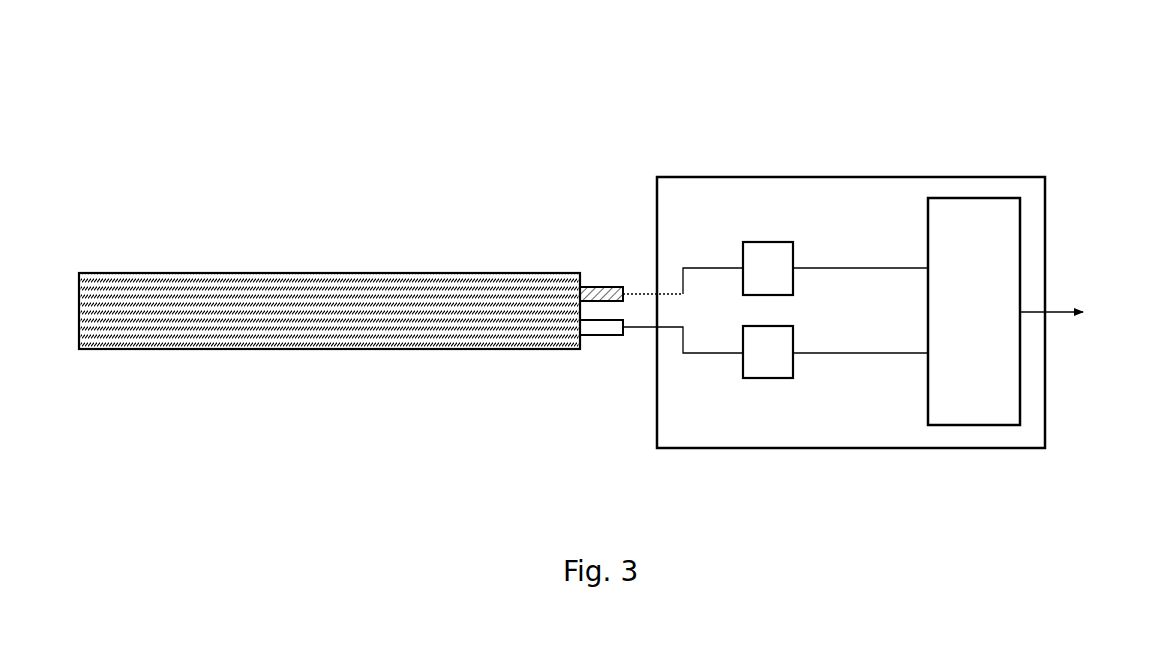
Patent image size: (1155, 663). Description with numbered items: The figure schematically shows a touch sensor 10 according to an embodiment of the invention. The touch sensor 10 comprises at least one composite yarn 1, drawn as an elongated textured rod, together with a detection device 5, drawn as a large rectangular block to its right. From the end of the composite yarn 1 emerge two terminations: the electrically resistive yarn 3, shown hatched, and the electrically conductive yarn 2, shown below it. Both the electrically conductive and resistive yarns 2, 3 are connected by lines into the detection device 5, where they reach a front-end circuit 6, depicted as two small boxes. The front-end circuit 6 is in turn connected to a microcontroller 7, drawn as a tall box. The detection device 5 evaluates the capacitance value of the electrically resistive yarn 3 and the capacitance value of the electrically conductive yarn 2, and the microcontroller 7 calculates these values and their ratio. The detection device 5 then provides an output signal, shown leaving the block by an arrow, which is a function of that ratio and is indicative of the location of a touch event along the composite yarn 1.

The touch sensor 10 is at (388, 98).
The composite yarn 1 is at (290, 250).
The electrically conductive yarn 2 is at (600, 336).
The electrically resistive yarn 3 is at (602, 287).
The detection device 5 is at (1052, 172).
The front-end circuit 6 is at (764, 249).
The microcontroller 7 is at (976, 405).